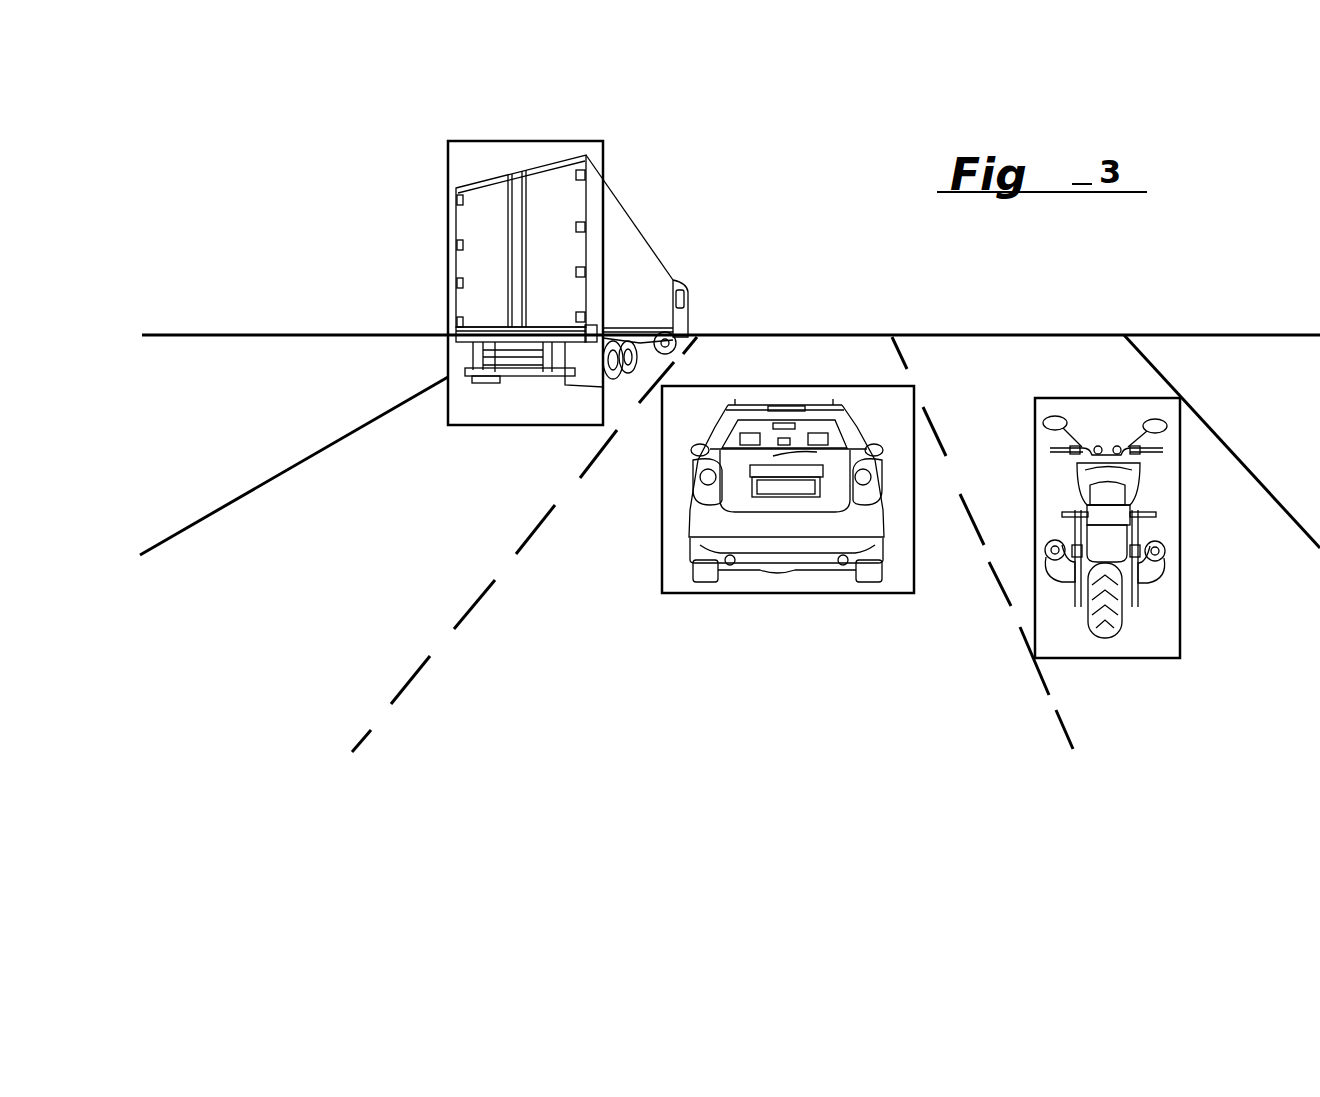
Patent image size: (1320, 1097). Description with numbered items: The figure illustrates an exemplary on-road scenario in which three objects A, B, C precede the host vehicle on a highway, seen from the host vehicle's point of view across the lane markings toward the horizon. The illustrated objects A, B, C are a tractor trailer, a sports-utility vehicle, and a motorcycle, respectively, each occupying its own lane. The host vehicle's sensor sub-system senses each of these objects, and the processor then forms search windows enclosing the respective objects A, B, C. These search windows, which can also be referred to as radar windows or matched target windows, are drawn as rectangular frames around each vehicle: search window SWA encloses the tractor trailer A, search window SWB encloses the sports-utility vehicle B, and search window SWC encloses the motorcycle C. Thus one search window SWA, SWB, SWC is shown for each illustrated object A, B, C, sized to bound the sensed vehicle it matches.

The search window SWA is at (448, 250).
The search window SWB is at (663, 533).
The search window SWC is at (1182, 575).
The object A is at (572, 234).
The object B is at (786, 457).
The object C is at (1105, 490).